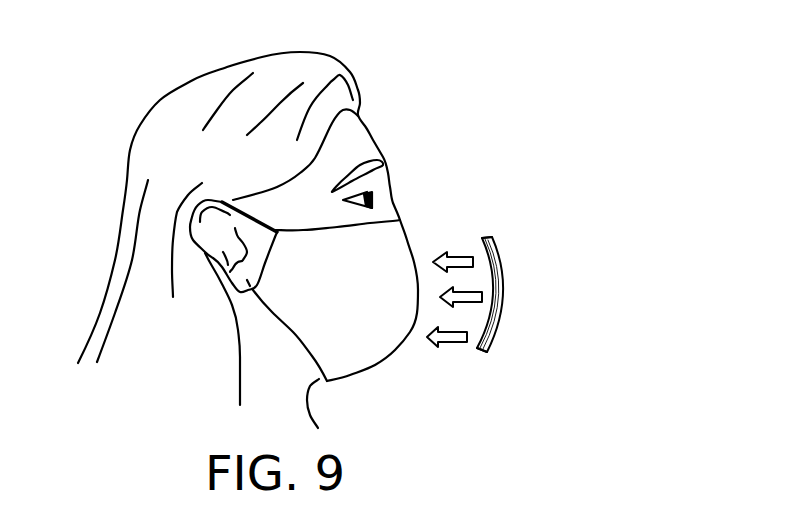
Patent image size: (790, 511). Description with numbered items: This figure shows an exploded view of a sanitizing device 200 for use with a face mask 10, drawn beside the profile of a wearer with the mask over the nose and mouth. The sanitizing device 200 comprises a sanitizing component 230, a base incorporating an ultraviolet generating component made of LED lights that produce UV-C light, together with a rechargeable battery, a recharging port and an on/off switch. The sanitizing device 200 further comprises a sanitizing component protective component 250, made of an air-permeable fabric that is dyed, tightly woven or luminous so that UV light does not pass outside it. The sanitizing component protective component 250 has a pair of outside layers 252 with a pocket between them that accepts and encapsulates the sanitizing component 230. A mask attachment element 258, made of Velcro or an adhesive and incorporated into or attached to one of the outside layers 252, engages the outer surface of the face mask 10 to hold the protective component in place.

The face mask 10 is at (428, 187).
The sanitizing device 200 is at (480, 142).
The sanitizing component 230 is at (497, 256).
The sanitizing component protective component 250 is at (520, 297).
The outside layers 252 is at (487, 357).
The mask attachment element 258 is at (475, 350).